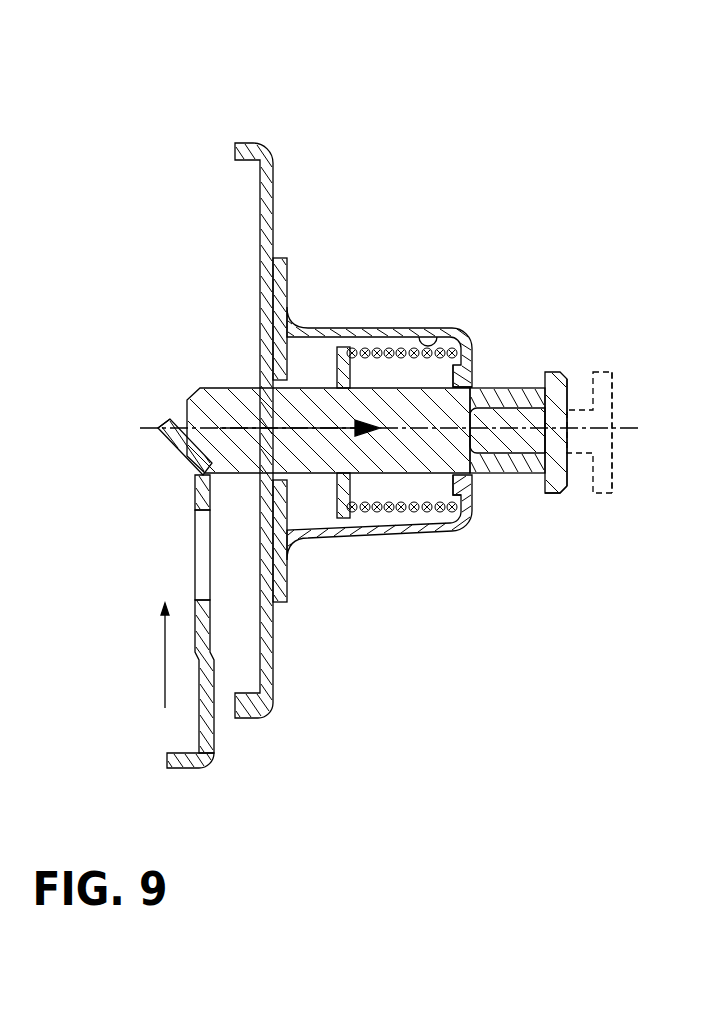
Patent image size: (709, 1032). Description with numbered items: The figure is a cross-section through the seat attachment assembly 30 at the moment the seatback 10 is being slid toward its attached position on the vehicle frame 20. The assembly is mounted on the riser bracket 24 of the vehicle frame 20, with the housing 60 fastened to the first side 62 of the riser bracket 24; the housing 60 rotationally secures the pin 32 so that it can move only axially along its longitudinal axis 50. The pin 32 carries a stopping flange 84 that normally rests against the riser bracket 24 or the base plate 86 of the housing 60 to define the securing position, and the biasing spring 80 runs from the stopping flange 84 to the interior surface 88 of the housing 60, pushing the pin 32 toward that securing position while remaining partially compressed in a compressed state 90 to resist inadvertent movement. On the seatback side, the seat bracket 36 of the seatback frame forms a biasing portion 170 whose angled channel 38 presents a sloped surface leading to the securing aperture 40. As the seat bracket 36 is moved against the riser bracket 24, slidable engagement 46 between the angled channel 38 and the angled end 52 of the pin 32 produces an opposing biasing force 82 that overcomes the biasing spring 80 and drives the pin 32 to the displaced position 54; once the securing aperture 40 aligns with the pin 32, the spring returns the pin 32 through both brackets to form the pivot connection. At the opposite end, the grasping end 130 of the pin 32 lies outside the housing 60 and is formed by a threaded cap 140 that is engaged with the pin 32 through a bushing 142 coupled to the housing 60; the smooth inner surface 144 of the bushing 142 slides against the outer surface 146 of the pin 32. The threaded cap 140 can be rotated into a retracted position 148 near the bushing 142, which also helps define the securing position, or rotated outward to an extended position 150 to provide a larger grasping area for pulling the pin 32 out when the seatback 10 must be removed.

The seatback 10 is at (171, 584).
The vehicle frame 20 is at (295, 402).
The riser bracket 24 is at (277, 692).
The seat attachment assembly 30 is at (330, 282).
The pin 32 is at (477, 396).
The seat bracket 36 is at (222, 758).
The angled channel 38 is at (168, 427).
The securing aperture 40 is at (200, 575).
The slidable engagement 46 is at (163, 652).
The longitudinal axis 50 is at (637, 398).
The angled end 52 is at (195, 466).
The displaced position 54 is at (200, 370).
The housing 60 is at (324, 327).
The first side 62 is at (277, 628).
The biasing spring 80 is at (390, 338).
The opposing biasing force 82 is at (323, 432).
The stopping flange 84 is at (333, 358).
The base plate 86 is at (280, 258).
The interior surface 88 is at (443, 330).
The compressed state 90 is at (444, 546).
The grasping end 130 is at (562, 506).
The threaded cap 140 is at (562, 373).
The bushing 142 is at (470, 487).
The inner surface 144 is at (445, 474).
The outer surface 146 is at (516, 388).
The retracted position 148 is at (578, 501).
The extended position 150 is at (634, 456).
The biasing portion 170 is at (150, 446).